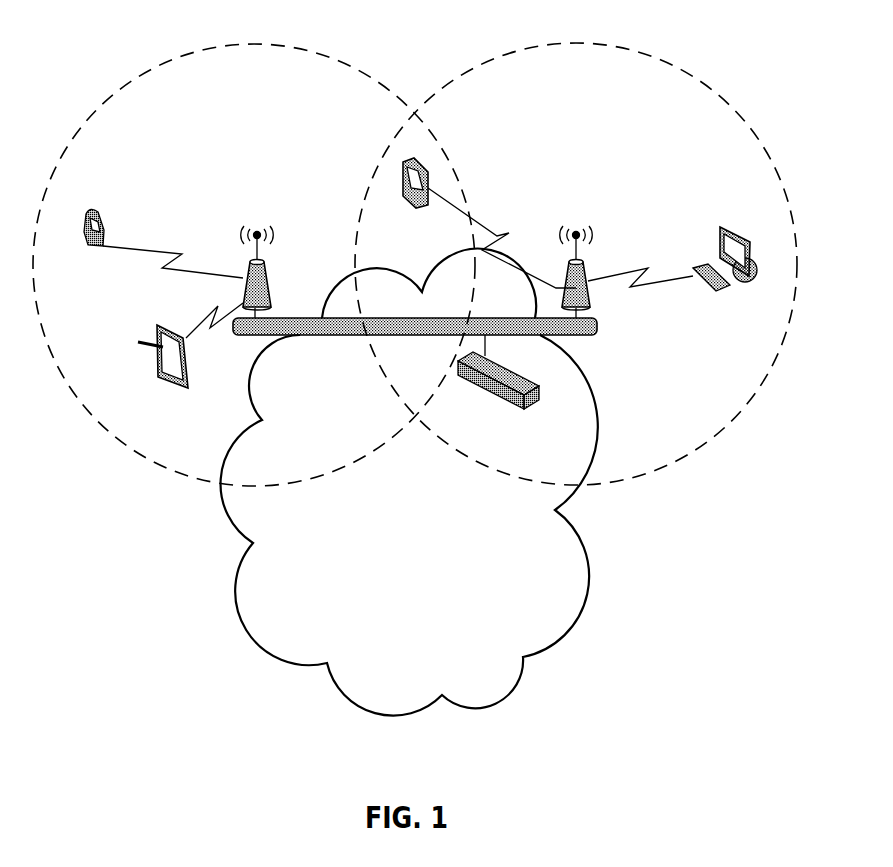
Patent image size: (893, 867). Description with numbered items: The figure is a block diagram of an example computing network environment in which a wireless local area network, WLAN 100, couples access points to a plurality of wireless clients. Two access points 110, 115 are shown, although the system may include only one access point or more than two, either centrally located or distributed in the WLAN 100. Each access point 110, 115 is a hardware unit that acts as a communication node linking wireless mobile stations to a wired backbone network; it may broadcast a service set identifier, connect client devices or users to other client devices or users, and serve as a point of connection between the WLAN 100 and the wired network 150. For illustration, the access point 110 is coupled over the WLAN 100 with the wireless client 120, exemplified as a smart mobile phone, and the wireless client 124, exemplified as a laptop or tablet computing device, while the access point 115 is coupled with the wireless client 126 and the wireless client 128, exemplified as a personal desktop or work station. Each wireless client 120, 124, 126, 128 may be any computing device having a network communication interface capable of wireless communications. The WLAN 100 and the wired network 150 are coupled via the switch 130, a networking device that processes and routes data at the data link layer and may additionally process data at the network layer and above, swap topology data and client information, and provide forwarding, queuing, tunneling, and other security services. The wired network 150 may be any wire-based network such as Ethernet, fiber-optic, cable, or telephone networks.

The wireless local area network 100 is at (115, 95).
The access point 110 is at (297, 204).
The access point 115 is at (585, 228).
The wireless client 120 is at (97, 216).
The wireless client 124 is at (165, 383).
The wireless client 126 is at (430, 170).
The wireless client 128 is at (736, 236).
The switch 130 is at (498, 393).
The wired network 150 is at (409, 482).